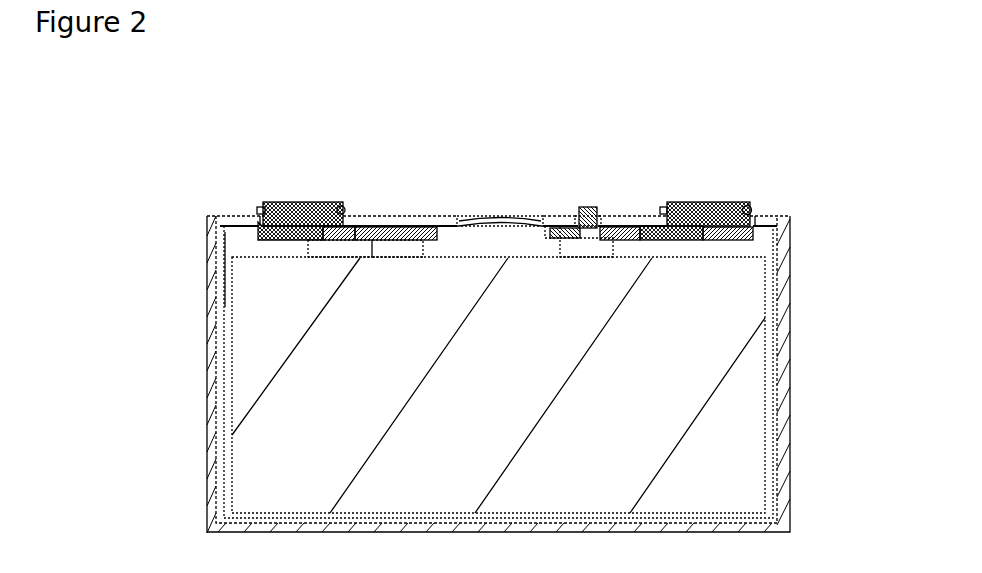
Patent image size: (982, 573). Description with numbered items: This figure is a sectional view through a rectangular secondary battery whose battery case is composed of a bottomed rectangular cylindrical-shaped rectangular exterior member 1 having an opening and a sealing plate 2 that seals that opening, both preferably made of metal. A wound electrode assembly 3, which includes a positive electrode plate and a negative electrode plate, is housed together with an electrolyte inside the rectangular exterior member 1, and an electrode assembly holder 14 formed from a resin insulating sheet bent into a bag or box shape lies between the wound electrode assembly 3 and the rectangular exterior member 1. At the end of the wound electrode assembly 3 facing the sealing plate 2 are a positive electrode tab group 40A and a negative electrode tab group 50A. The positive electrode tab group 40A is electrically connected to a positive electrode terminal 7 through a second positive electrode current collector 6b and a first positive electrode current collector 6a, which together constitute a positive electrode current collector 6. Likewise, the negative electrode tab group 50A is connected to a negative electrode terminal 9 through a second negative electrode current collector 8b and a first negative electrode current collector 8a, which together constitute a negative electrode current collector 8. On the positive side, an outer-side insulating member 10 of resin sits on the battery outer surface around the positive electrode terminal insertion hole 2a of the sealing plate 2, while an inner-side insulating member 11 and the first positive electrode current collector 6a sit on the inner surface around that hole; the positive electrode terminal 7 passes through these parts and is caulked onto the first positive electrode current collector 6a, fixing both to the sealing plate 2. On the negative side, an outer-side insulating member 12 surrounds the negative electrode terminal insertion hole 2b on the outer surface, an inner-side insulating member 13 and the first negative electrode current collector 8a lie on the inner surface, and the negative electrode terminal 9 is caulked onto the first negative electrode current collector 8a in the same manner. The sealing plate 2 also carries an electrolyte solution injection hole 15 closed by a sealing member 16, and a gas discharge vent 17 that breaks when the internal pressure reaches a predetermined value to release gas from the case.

The rectangular exterior member 1 is at (783, 398).
The sealing plate 2 is at (438, 220).
The positive electrode terminal insertion hole 2a is at (753, 216).
The negative electrode terminal insertion hole 2b is at (262, 222).
The wound electrode assembly 3 is at (248, 468).
The positive electrode current collector 6 is at (633, 240).
The first positive electrode current collector 6a is at (757, 239).
The second positive electrode current collector 6b is at (633, 238).
The positive electrode terminal 7 is at (702, 202).
The negative electrode current collector 8 is at (328, 243).
The first negative electrode current collector 8a is at (265, 232).
The second negative electrode current collector 8b is at (372, 230).
The negative electrode terminal 9 is at (300, 202).
The outer-side insulating member 10 is at (752, 205).
The inner-side insulating member 11 is at (613, 254).
The outer-side insulating member 12 is at (260, 204).
The inner-side insulating member 13 is at (423, 238).
The electrode assembly holder 14 is at (775, 436).
The electrolyte solution injection hole 15 is at (562, 226).
The sealing member 16 is at (587, 207).
The gas discharge vent 17 is at (498, 214).
The positive electrode tab group 40A is at (550, 228).
The negative electrode tab group 50A is at (393, 224).